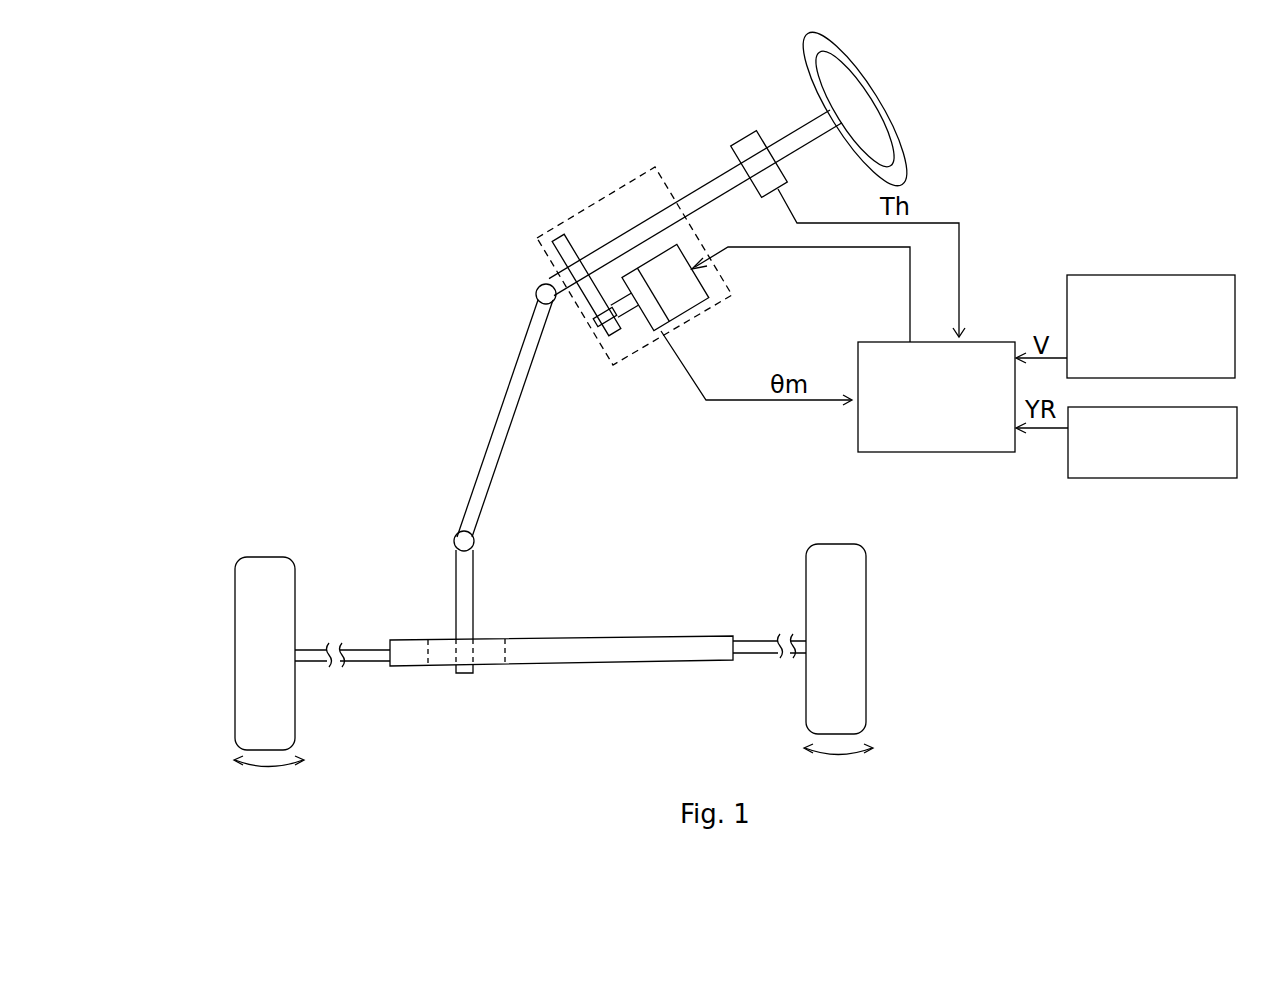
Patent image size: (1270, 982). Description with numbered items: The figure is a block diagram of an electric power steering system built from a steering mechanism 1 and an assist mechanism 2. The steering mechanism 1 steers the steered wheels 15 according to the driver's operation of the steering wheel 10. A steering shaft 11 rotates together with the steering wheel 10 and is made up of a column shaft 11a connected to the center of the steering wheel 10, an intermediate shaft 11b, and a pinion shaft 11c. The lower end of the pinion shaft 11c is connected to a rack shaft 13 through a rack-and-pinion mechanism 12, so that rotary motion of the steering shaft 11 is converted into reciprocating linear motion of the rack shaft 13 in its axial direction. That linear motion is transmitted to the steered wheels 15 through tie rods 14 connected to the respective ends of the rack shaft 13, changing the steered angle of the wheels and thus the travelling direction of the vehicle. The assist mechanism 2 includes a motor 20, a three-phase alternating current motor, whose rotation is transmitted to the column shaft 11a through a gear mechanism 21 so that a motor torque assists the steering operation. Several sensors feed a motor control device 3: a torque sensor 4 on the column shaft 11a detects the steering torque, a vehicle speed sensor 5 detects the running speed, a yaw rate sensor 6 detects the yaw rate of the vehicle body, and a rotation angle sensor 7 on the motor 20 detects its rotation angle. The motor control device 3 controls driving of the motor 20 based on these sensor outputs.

The steering mechanism 1 is at (405, 140).
The assist mechanism 2 is at (607, 195).
The motor control device 3 is at (948, 453).
The torque sensor 4 is at (741, 139).
The vehicle speed sensor 5 is at (1160, 274).
The yaw rate sensor 6 is at (1178, 478).
The rotation angle sensor 7 is at (651, 328).
The steering wheel 10 is at (883, 102).
The steering shaft 11 is at (447, 268).
The column shaft 11a is at (538, 287).
The intermediate shaft 11b is at (499, 412).
The pinion shaft 11c is at (455, 560).
The rack-and-pinion mechanism 12 is at (510, 638).
The rack shaft 13 is at (582, 635).
The tie rod 14 is at (364, 663).
The steered wheel 15 is at (235, 652).
The motor 20 is at (703, 287).
The gear mechanism 21 is at (596, 316).